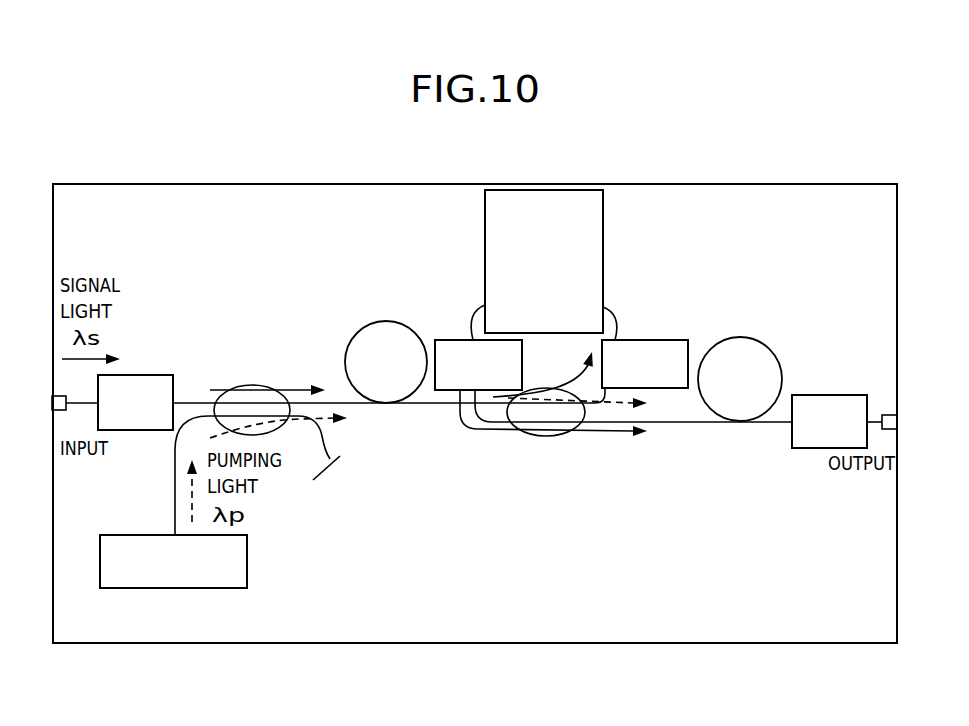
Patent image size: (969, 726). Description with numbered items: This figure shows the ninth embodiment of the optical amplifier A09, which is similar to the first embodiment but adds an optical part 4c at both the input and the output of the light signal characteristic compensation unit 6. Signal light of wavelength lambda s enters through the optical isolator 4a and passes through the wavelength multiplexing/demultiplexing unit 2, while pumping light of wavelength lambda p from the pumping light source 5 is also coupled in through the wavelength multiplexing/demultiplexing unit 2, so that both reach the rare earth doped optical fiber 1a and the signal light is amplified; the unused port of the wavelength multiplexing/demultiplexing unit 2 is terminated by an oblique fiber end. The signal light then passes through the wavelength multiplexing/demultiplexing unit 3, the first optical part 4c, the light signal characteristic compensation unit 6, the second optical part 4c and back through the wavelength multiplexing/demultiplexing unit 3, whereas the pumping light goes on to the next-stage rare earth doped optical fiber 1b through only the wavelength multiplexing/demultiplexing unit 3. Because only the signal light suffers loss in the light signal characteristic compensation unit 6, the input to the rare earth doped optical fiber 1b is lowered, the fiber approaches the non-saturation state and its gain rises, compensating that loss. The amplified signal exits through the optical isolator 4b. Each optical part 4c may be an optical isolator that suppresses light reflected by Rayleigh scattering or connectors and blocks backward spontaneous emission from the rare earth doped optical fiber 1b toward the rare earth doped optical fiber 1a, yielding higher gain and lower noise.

The optical amplifier A09 is at (697, 184).
The optical isolator 4a is at (140, 375).
The wavelength multiplexing/demultiplexing unit 2 is at (250, 388).
The pumping light source 5 is at (247, 557).
The rare earth doped optical fiber 1a is at (383, 321).
The optical part 4c is at (456, 340).
The light signal characteristic compensation unit 6 is at (603, 220).
The wavelength multiplexing/demultiplexing unit 3 is at (541, 437).
The rare earth doped optical fiber 1b is at (740, 337).
The optical isolator 4b is at (822, 395).